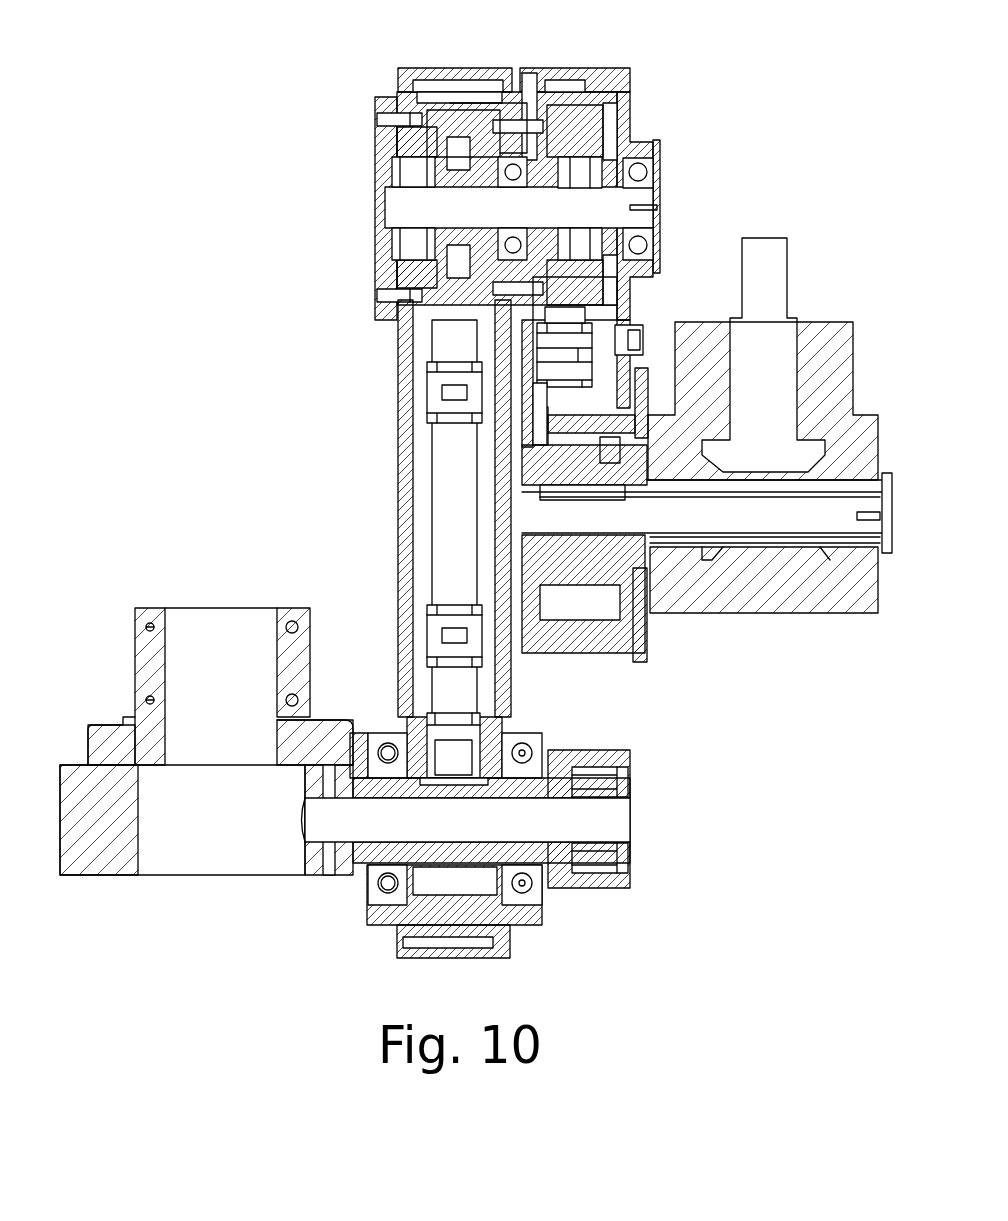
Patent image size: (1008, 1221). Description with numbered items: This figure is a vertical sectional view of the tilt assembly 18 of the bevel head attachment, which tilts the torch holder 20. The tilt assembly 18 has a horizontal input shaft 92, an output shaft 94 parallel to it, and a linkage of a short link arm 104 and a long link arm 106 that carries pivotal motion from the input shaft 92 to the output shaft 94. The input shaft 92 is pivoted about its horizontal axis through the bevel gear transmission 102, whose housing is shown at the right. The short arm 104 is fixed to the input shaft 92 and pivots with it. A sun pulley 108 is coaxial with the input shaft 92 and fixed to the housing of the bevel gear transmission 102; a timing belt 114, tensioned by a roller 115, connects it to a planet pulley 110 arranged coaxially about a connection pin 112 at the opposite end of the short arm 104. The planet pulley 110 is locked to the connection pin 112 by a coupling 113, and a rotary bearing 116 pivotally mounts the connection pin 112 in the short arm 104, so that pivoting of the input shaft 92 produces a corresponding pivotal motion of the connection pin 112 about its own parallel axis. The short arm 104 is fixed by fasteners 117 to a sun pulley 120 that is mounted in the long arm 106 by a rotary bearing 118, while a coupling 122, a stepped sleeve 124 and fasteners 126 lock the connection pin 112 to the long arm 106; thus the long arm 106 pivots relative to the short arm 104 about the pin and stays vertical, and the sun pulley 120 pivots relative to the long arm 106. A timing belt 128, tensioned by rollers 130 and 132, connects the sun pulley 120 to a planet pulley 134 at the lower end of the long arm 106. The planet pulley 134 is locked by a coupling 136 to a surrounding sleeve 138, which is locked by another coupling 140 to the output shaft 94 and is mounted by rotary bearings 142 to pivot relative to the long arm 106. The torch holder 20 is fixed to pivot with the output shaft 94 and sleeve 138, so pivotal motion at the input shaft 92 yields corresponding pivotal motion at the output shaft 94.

The tilt assembly 18 is at (245, 255).
The torch holder 20 is at (117, 866).
The input shaft 92 is at (654, 529).
The output shaft 94 is at (598, 823).
The bevel gear transmission 102 is at (770, 618).
The short link arm 104 is at (625, 122).
The long link arm 106 is at (405, 670).
The sun pulley 108 is at (605, 625).
The planet pulley 110 is at (595, 298).
The connection pin 112 is at (410, 203).
The coupling 113 is at (598, 240).
The timing belt 114 is at (543, 405).
The roller 115 is at (540, 366).
The rotary bearing 116 is at (648, 165).
The fasteners 117 is at (533, 123).
The rotary bearing 118 is at (513, 163).
The sun pulley 120 is at (440, 125).
The coupling 122 is at (405, 247).
The stepped sleeve 124 is at (390, 143).
The fasteners 126 is at (385, 115).
The timing belt 128 is at (432, 530).
The roller 130 is at (432, 403).
The roller 132 is at (432, 612).
The planet pulley 134 is at (470, 740).
The coupling 136 is at (443, 762).
The sleeve 138 is at (560, 765).
The coupling 140 is at (605, 778).
The rotary bearings 142 is at (372, 897).